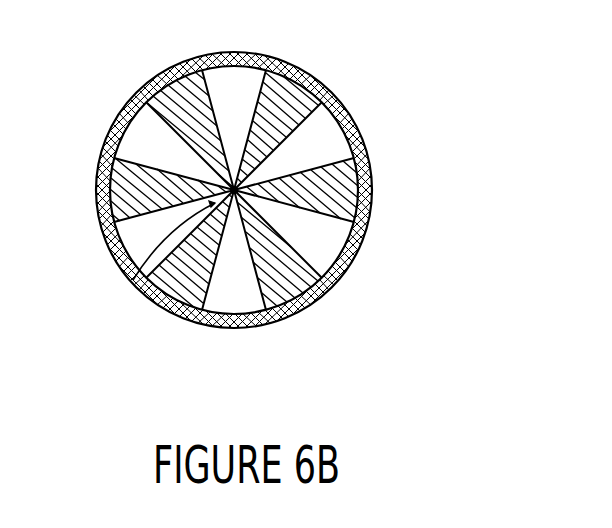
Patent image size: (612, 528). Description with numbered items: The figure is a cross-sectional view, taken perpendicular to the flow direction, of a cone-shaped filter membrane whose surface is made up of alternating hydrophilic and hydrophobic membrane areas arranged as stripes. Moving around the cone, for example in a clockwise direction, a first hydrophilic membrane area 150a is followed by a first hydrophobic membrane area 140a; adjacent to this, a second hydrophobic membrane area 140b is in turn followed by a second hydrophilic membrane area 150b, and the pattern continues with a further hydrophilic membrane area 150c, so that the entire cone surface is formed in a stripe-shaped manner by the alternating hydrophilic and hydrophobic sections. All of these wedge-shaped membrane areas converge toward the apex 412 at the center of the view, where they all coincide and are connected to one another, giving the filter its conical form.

The first hydrophilic membrane area 150a is at (316, 76).
The second hydrophilic membrane area 150b is at (370, 187).
The hydrophilic membrane area 150c is at (292, 316).
The first hydrophobic membrane area 140a is at (328, 136).
The second hydrophobic membrane area 140b is at (327, 237).
The apex 412 is at (133, 280).